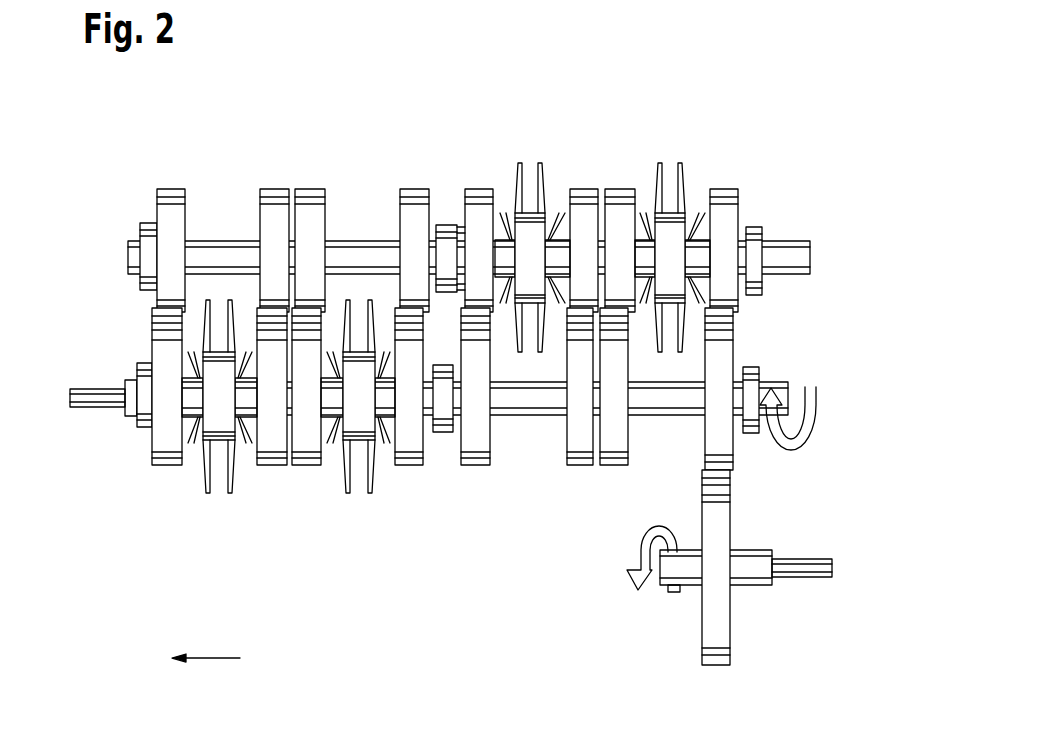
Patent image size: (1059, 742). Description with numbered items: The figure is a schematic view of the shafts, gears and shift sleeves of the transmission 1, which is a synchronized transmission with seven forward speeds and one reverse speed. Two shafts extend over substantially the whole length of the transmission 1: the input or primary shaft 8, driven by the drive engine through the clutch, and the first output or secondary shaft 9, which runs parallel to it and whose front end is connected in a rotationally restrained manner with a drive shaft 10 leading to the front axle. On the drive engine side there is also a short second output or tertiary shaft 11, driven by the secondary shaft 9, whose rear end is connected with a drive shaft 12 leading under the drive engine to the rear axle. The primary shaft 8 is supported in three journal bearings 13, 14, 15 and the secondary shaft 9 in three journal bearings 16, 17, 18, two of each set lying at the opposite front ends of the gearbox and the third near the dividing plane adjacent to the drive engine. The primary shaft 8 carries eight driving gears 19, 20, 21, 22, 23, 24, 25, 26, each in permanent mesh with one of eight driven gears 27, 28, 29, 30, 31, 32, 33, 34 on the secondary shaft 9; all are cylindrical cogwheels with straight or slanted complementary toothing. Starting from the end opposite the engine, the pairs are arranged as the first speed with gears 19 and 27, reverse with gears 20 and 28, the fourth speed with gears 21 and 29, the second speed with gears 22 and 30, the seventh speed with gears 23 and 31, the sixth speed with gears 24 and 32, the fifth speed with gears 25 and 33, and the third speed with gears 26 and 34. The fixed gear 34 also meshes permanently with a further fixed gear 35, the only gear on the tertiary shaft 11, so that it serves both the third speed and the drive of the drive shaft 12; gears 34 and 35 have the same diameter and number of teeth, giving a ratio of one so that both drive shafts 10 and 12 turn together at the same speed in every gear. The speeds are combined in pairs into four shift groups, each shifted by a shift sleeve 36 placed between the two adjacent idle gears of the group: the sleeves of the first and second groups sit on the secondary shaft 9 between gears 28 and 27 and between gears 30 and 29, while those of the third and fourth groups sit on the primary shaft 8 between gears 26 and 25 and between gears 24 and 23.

The transmission 1 is at (451, 355).
The input or primary shaft 8 is at (364, 244).
The first output or secondary shaft 9 is at (530, 416).
The drive shaft 10 is at (90, 408).
The second output shaft or tertiary shaft 11 is at (763, 549).
The drive shaft 12 is at (801, 558).
The journal bearing 13 is at (148, 223).
The journal bearing 14 is at (446, 226).
The journal bearing 15 is at (754, 228).
The journal bearing 16 is at (143, 428).
The journal bearing 17 is at (443, 434).
The journal bearing 18 is at (751, 367).
The driving gear 19 is at (171, 190).
The driving gear 20 is at (276, 190).
The driving gear 21 is at (310, 190).
The driving gear 22 is at (415, 190).
The driving gear 23 is at (481, 190).
The driving gear 24 is at (585, 190).
The driving gear 25 is at (620, 190).
The driving gear 26 is at (723, 190).
The driven gear 27 is at (168, 465).
The driven gear 28 is at (272, 465).
The driven gear 29 is at (308, 465).
The driven gear 30 is at (410, 465).
The driven gear 31 is at (478, 465).
The driven gear 32 is at (581, 465).
The driven gear 33 is at (615, 465).
The fixed gear 34 is at (713, 427).
The fixed gear 35 is at (708, 618).
The shift sleeve 36 is at (533, 213).